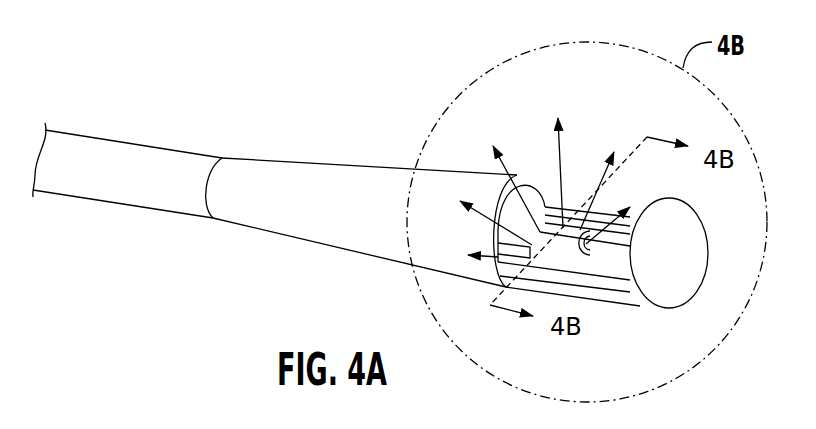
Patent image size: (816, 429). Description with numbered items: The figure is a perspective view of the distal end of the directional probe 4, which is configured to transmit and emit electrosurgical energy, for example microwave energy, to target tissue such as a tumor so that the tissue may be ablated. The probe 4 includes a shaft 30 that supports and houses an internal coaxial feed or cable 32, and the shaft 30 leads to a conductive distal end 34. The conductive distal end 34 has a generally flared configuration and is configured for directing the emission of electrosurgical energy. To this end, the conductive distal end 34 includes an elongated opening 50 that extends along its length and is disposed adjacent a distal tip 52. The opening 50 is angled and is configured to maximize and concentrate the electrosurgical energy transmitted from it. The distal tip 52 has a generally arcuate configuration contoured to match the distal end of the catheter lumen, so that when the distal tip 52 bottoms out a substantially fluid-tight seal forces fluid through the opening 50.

The probe 4 is at (382, 212).
The shaft 30 is at (113, 140).
The conductive distal end 34 is at (373, 157).
The coaxial feed or cable 32 is at (543, 208).
The opening 50 is at (622, 190).
The distal tip 52 is at (670, 292).